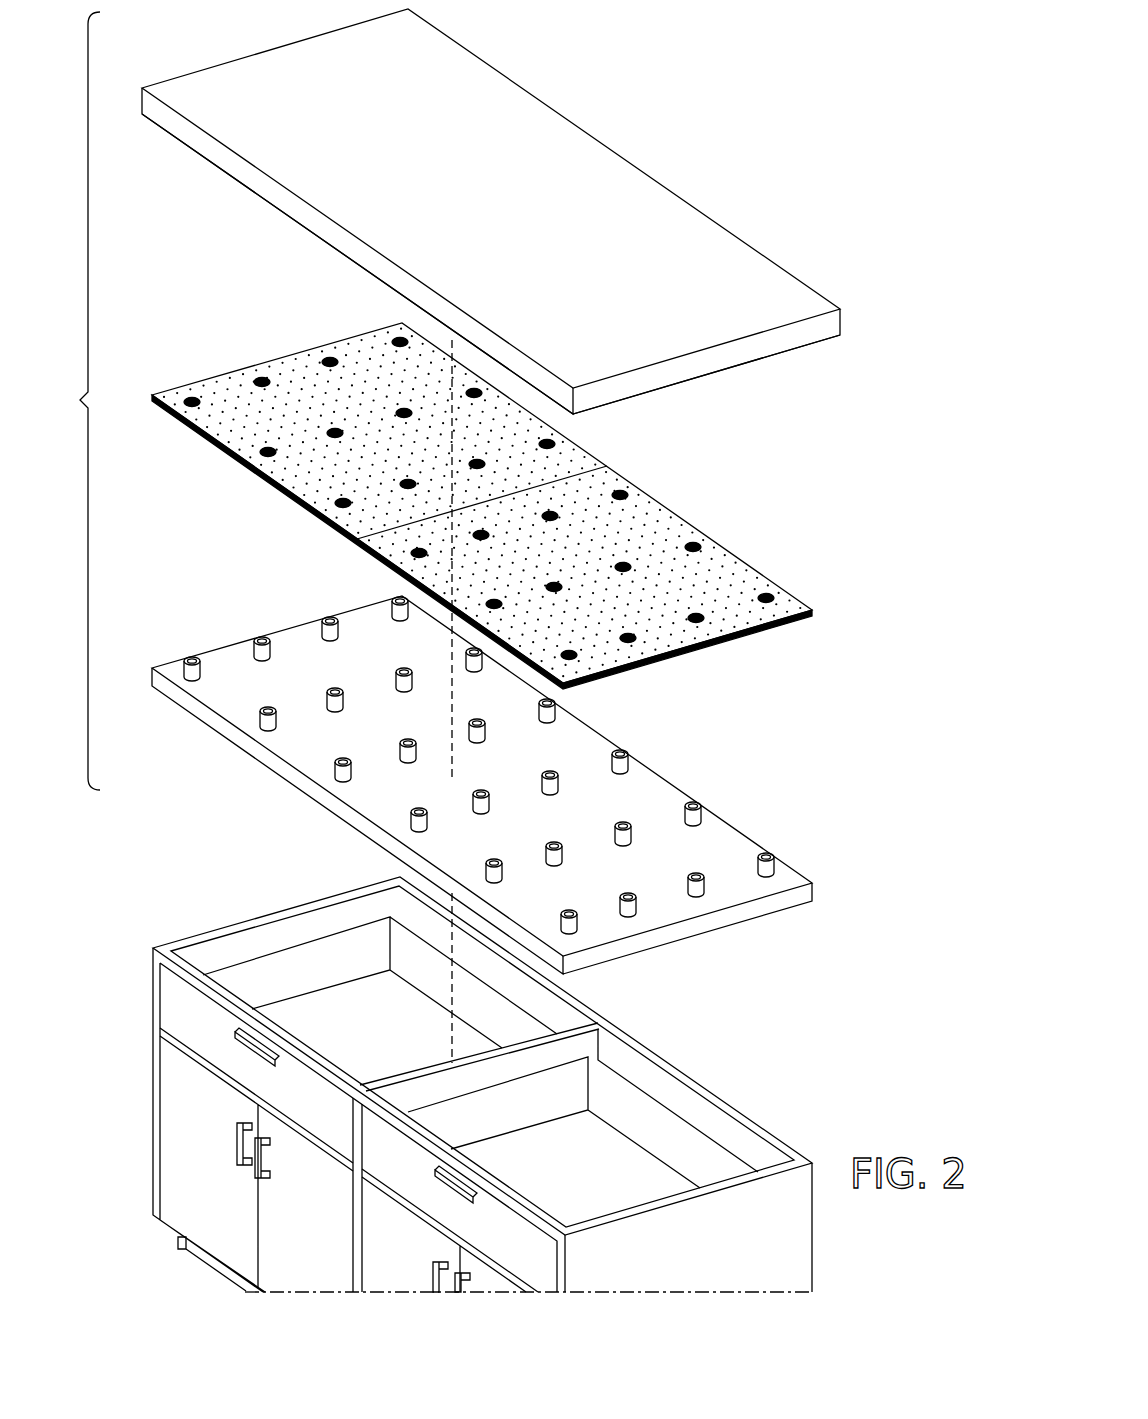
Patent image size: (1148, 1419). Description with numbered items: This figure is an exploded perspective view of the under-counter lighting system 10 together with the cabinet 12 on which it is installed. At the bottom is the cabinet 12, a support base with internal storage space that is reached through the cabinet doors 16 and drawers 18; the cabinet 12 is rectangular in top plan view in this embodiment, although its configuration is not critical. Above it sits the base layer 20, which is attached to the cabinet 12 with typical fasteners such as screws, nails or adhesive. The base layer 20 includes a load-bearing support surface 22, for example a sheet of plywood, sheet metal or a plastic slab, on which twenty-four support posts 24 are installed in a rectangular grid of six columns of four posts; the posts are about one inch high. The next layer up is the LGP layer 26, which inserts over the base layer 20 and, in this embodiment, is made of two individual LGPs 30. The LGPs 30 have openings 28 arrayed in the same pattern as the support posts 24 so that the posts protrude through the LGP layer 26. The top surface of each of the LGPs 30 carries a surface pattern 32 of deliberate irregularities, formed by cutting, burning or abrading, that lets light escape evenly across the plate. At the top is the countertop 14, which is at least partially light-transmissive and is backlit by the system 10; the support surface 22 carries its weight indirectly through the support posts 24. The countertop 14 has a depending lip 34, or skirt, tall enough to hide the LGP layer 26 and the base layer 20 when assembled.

The under-counter lighting system 10 is at (71, 401).
The cabinet 12 is at (444, 1079).
The countertop 14 is at (491, 211).
The cabinet doors 16 is at (185, 1132).
The drawers 18 is at (182, 1006).
The base layer 20 is at (482, 788).
The support surface 22 is at (600, 928).
The support posts 24 is at (620, 772).
The LGP layer 26 is at (743, 630).
The openings 28 is at (700, 545).
The individual LGPs 30 is at (490, 507).
The surface pattern 32 is at (287, 363).
The depending lip 34 is at (772, 346).